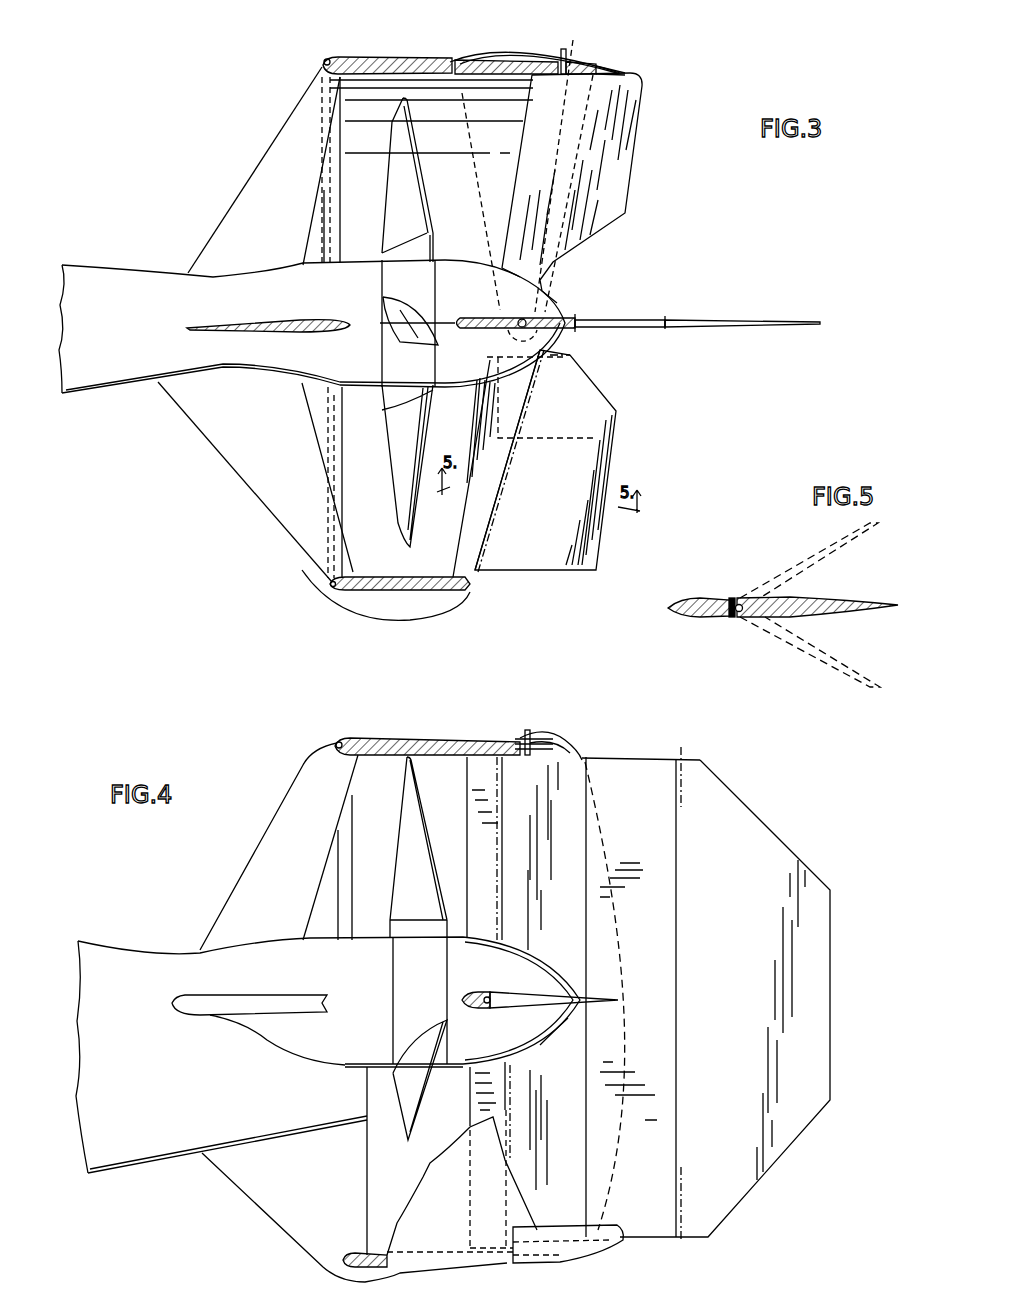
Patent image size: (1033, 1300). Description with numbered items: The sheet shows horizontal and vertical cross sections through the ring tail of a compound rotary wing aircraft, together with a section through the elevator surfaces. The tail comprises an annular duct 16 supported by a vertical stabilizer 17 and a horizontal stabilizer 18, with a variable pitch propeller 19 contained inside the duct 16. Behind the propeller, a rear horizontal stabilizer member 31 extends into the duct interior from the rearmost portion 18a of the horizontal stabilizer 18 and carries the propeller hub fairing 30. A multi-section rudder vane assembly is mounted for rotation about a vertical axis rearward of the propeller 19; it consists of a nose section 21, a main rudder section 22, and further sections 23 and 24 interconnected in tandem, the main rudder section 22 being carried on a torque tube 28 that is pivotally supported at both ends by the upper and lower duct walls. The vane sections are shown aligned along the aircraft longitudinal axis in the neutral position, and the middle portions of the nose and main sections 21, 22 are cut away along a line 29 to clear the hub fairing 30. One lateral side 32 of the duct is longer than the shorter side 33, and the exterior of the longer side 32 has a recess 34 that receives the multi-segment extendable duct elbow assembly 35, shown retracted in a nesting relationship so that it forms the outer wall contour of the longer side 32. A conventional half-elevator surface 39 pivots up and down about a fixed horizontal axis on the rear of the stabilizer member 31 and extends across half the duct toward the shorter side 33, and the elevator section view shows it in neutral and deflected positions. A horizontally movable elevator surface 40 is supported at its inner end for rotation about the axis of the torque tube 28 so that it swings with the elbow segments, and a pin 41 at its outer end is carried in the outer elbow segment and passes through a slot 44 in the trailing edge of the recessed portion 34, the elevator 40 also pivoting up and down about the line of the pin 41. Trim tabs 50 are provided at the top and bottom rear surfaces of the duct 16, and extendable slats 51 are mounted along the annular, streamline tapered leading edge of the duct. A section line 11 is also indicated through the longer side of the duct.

In FIG. 3, the rotor 11 is at (548, 23).
In FIG. 4, the annular duct 16 is at (412, 738).
In FIG. 3, the vertical stabilizer 17 is at (248, 318).
In FIG. 4, the vertical stabilizer 17 is at (255, 870).
In FIG. 3, the horizontal stabilizer 18 is at (225, 238).
In FIG. 4, the horizontal stabilizer 18 is at (268, 1000).
In FIG. 3, the rearmost portion of the horizontal stabilizer 18a is at (445, 612).
In FIG. 3, the variable pitch propeller 19 is at (425, 292).
In FIG. 4, the variable pitch propeller 19 is at (425, 982).
In FIG. 3, the rudder vane nose section 21 is at (476, 320).
In FIG. 4, the rudder vane nose section 21 is at (495, 863).
In FIG. 3, the main rudder section 22 is at (575, 328).
In FIG. 4, the main rudder section 22 is at (568, 872).
In FIG. 3, the rudder vane section 23 is at (630, 326).
In FIG. 4, the rudder vane section 23 is at (653, 846).
In FIG. 3, the rudder vane section 24 is at (724, 325).
In FIG. 4, the rudder vane section 24 is at (740, 890).
In FIG. 3, the torque tube 28 is at (530, 320).
In FIG. 4, the torque tube 28 is at (527, 730).
In FIG. 4, the cut-away line 29 is at (552, 1035).
In FIG. 3, the propeller hub fairing 30 is at (478, 282).
In FIG. 4, the propeller hub fairing 30 is at (490, 1040).
In FIG. 3, the rear horizontal stabilizer member 31 is at (470, 516).
In FIG. 5, the rear horizontal stabilizer member 31 is at (712, 616).
In FIG. 4, the rear horizontal stabilizer member 31 is at (480, 990).
In FIG. 3, the longer lateral side of the duct 32 is at (412, 57).
In FIG. 4, the longer lateral side of the duct 32 is at (553, 752).
In FIG. 3, the shorter lateral side of the duct 33 is at (380, 598).
In FIG. 3, the recess 34 is at (452, 60).
In FIG. 3, the extendable duct elbow assembly 35 is at (518, 47).
In FIG. 4, the extendable duct elbow assembly 35 is at (553, 736).
In FIG. 3, the half-elevator surface 39 is at (580, 461).
In FIG. 5, the half-elevator surface 39 is at (838, 617).
In FIG. 4, the half-elevator surface 39 is at (522, 992).
In FIG. 3, the movable elevator surface 40 is at (612, 200).
In FIG. 3, the pin 41 is at (568, 54).
In FIG. 3, the slot 44 is at (573, 78).
In FIG. 3, the trim tabs 50 is at (583, 412).
In FIG. 4, the trim tabs 50 is at (600, 1252).
In FIG. 3, the extendable slats 51 is at (324, 62).
In FIG. 4, the extendable slats 51 is at (336, 742).